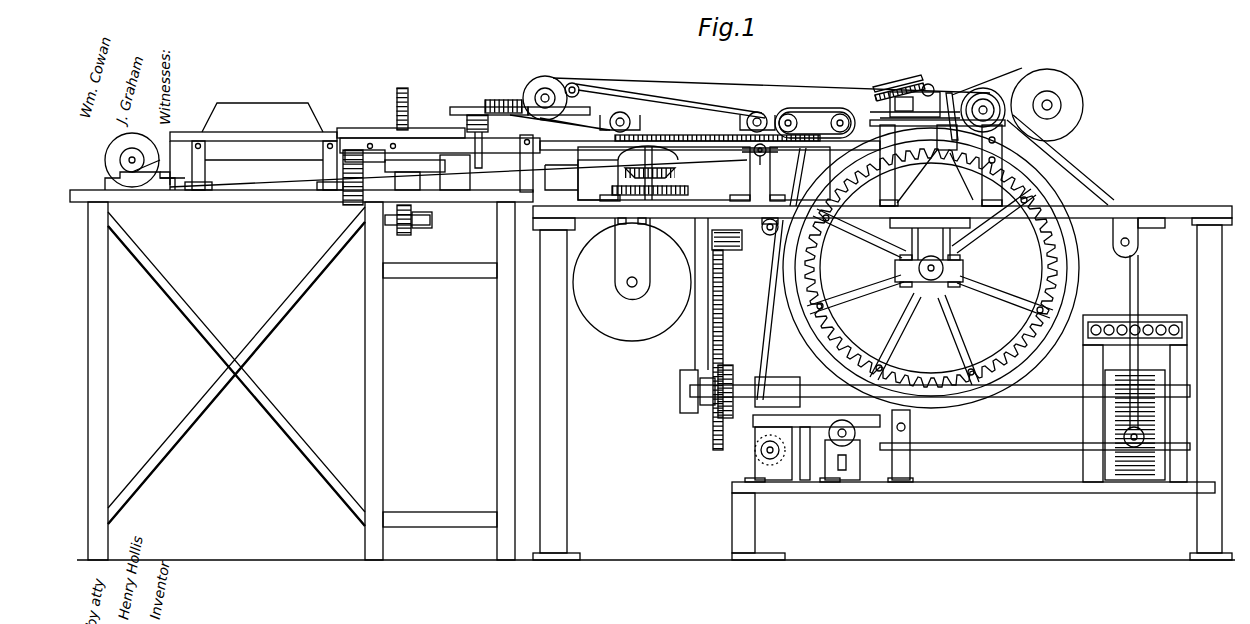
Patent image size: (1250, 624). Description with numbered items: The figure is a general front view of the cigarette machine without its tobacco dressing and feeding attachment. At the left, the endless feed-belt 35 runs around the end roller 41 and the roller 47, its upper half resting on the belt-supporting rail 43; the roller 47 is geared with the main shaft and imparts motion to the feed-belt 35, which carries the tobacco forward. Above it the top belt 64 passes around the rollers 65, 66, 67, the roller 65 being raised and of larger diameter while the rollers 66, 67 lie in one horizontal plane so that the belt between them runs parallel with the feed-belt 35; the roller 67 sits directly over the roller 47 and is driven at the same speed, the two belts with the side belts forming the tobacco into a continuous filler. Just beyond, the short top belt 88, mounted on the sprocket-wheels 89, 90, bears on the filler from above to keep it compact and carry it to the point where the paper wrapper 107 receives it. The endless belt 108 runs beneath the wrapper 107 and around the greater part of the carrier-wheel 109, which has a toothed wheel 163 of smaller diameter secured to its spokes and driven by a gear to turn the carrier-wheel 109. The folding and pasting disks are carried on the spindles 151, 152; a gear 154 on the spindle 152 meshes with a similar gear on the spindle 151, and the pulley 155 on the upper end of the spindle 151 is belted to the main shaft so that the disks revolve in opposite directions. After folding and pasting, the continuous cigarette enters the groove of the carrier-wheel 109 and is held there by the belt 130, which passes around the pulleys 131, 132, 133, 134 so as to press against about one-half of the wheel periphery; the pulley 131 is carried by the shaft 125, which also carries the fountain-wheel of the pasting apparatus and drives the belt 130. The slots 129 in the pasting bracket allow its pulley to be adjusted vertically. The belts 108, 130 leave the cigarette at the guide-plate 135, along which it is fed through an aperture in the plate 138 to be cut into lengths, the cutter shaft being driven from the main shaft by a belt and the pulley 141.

The feed-belt 35 is at (150, 133).
The end roller 41 is at (105, 160).
The belt-supporting rail 43 is at (212, 147).
The roller 47 is at (760, 157).
The top belt 64 is at (660, 93).
The roller 65 is at (548, 80).
The roller 66 is at (620, 112).
The roller 67 is at (766, 115).
The short top belt 88 is at (815, 114).
The sprocket-wheel 89 is at (797, 123).
The sprocket-wheel 90 is at (822, 105).
The paper wrapper 107 is at (678, 230).
The endless belt 108 is at (796, 178).
The carrier-wheel 109 is at (931, 268).
The shaft 125 is at (979, 126).
The slots 129 is at (738, 382).
The belt 130 is at (1087, 190).
The pulley 131 is at (990, 90).
The pulley 132 is at (1140, 243).
The pulley 133 is at (1140, 437).
The pulley 134 is at (856, 433).
The guide-plate 135 is at (816, 420).
The plate 138 is at (745, 426).
The pulley 141 is at (1035, 436).
The spindle 151 is at (890, 104).
The spindle 152 is at (932, 88).
The gear 154 is at (954, 100).
The pulley 155 is at (900, 80).
The toothed wheel 163 is at (820, 278).